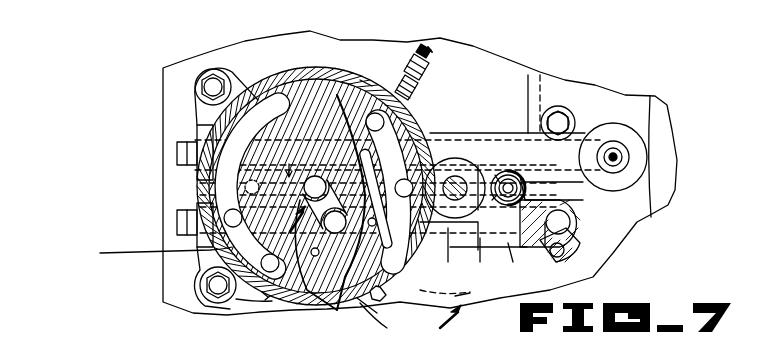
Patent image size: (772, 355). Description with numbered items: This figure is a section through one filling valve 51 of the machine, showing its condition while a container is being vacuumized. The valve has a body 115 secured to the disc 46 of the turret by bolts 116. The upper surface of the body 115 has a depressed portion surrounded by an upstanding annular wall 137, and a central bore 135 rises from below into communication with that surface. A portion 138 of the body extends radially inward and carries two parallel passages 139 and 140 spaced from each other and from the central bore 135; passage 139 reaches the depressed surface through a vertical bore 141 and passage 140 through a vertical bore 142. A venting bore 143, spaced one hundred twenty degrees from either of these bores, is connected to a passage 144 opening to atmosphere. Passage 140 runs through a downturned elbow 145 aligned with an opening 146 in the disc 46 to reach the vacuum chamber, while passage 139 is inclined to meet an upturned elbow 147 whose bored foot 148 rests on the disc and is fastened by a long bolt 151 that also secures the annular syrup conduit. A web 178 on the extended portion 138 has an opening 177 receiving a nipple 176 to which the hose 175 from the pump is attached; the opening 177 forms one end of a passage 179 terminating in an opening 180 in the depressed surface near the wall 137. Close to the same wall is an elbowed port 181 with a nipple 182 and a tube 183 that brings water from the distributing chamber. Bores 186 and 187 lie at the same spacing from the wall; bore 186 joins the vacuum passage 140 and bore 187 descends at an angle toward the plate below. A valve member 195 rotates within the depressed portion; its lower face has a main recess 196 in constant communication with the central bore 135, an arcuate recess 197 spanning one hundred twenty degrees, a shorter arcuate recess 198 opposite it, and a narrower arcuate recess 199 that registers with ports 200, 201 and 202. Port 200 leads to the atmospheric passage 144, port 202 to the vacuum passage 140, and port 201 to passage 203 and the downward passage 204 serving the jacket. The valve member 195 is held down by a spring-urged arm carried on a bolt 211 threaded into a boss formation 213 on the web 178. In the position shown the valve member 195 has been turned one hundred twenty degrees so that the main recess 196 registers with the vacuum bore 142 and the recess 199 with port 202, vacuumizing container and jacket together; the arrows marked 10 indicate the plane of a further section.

The disc 46 is at (228, 58).
The bolts 116 is at (207, 87).
The filling valve 51 is at (205, 125).
The passage 144 is at (200, 192).
The bore 186 is at (197, 232).
The arcuate recess 197 is at (147, 250).
The body 115 is at (267, 298).
The bore 187 is at (262, 292).
The main recess 196 is at (305, 272).
The passage 204 is at (381, 312).
The port 201 is at (391, 323).
The section line 10 is at (367, 278).
The narrower arcuate recess 199 is at (392, 280).
The passage 203 is at (478, 290).
The portion 138 is at (448, 254).
The passage 140 is at (482, 259).
The opening 177 is at (512, 261).
The shorter arcuate recess 198 is at (440, 220).
The bolt 211 is at (482, 208).
The boss formation 213 is at (477, 173).
The opening 180 is at (438, 168).
The passage 179 is at (478, 175).
The nipple 176 is at (508, 178).
The hose 175 is at (520, 178).
The web 178 is at (527, 191).
The downturned elbow 145 is at (575, 214).
The opening 146 is at (578, 230).
The bored foot 148 is at (622, 147).
The long bolt 151 is at (622, 160).
The upturned elbow 147 is at (620, 184).
The passage 139 is at (482, 133).
The elbowed port 181 is at (386, 122).
The nipple 182 is at (427, 97).
The tube 183 is at (428, 47).
The vertical bore 141 is at (367, 85).
The valve member 195 is at (325, 110).
The upstanding annular wall 137 is at (297, 70).
The venting bore 143 is at (289, 163).
The central bore 135 is at (325, 202).
The vertical bore 142 is at (335, 222).
The port 202 is at (378, 192).
The port 200 is at (252, 186).